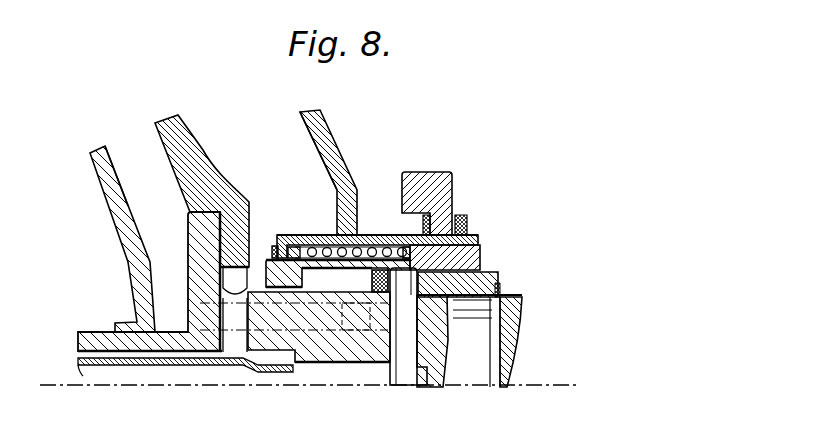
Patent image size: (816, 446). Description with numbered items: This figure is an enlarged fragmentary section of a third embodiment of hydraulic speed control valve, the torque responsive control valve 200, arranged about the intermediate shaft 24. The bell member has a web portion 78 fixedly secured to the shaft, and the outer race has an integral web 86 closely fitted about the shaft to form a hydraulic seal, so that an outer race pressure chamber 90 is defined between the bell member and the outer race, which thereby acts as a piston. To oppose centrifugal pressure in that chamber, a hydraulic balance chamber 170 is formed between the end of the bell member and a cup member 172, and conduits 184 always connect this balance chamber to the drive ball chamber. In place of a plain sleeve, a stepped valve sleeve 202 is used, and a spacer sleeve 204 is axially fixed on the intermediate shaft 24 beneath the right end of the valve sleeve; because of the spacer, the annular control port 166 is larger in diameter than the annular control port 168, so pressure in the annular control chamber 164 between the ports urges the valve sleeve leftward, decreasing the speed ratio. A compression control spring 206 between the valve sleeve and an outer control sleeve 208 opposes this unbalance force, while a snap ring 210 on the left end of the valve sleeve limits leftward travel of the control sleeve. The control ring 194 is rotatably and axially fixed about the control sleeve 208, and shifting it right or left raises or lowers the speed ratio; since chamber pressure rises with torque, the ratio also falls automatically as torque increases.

The intermediate shaft 24 is at (479, 373).
The web portion 78 is at (178, 133).
The integral web 86 is at (125, 223).
The outer race pressure chamber 90 is at (132, 172).
The annular control chamber 164 is at (347, 280).
The annular control port 166 is at (393, 280).
The annular control port 168 is at (305, 283).
The hydraulic balance chamber 170 is at (297, 162).
The cup member 172 is at (323, 135).
The conduits 184 is at (233, 343).
The control ring 194 is at (408, 178).
The torque responsive control valve 200 is at (389, 233).
The stepped valve sleeve 202 is at (473, 255).
The spacer sleeve 204 is at (487, 277).
The compression control spring 206 is at (374, 246).
The outer control sleeve 208 is at (297, 236).
The snap ring 210 is at (273, 243).